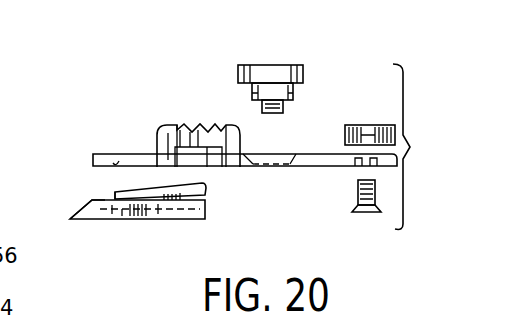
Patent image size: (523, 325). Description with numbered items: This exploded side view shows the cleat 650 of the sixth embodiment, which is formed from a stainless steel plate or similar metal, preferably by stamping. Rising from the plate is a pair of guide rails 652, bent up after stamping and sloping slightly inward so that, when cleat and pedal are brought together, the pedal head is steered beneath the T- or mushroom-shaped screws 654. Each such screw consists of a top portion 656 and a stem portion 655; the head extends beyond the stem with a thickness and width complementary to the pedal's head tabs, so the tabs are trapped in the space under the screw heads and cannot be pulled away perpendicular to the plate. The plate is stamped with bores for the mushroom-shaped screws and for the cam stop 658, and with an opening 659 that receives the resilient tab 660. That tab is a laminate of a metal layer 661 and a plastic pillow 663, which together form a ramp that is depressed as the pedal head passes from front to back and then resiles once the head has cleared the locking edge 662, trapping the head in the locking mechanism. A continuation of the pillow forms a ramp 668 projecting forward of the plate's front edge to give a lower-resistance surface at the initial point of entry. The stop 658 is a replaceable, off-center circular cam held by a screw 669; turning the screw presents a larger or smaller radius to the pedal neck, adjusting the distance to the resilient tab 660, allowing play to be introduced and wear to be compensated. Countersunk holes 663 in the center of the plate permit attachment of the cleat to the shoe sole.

The cleat 650 is at (422, 146).
The guide rails 652 is at (211, 128).
The mushroom-shaped screws 654 is at (295, 93).
The stem portion 655 is at (253, 101).
The top portion 656 is at (249, 66).
The stop 658 is at (386, 125).
The opening 659 is at (116, 160).
The resilient tab 660 is at (147, 220).
The metal layer 661 is at (113, 192).
The locking edge 662 is at (206, 187).
The plastic pillow 663 is at (293, 165).
The ramp 668 is at (83, 212).
The screw 669 is at (366, 213).